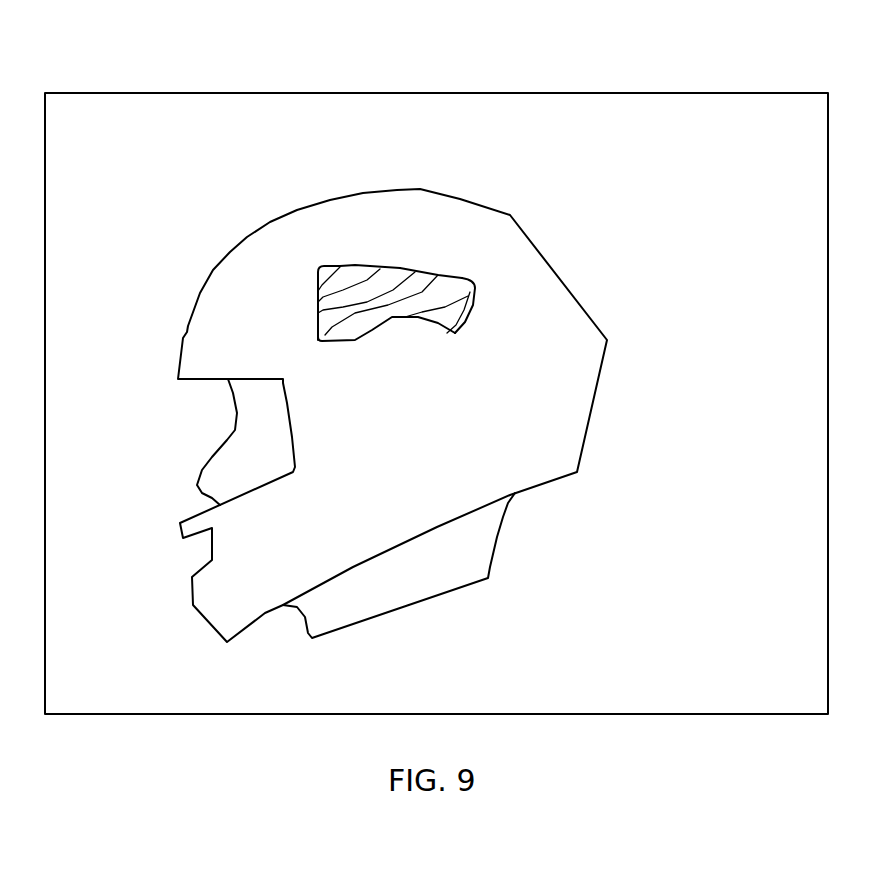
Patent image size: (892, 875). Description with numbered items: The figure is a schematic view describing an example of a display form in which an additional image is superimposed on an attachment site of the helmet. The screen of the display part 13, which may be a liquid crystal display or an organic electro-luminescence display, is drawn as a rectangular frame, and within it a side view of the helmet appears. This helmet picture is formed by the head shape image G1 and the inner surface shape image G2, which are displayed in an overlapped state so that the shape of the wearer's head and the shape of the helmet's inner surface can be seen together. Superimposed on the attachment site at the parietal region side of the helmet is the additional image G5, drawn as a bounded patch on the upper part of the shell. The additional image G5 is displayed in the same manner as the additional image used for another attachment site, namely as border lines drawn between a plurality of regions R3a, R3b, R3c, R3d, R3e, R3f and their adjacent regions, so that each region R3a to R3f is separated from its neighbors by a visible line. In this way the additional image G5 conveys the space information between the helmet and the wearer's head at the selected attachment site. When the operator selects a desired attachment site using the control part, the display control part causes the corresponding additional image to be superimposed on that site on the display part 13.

The display part 13 is at (470, 93).
The head shape image G1 is at (203, 465).
The inner surface shape image G2 is at (513, 213).
The additional image G5 is at (367, 345).
The region R3a is at (327, 268).
The region R3b is at (313, 283).
The region R3c is at (375, 270).
The region R3d is at (422, 270).
The region R3e is at (472, 276).
The region R3f is at (442, 324).